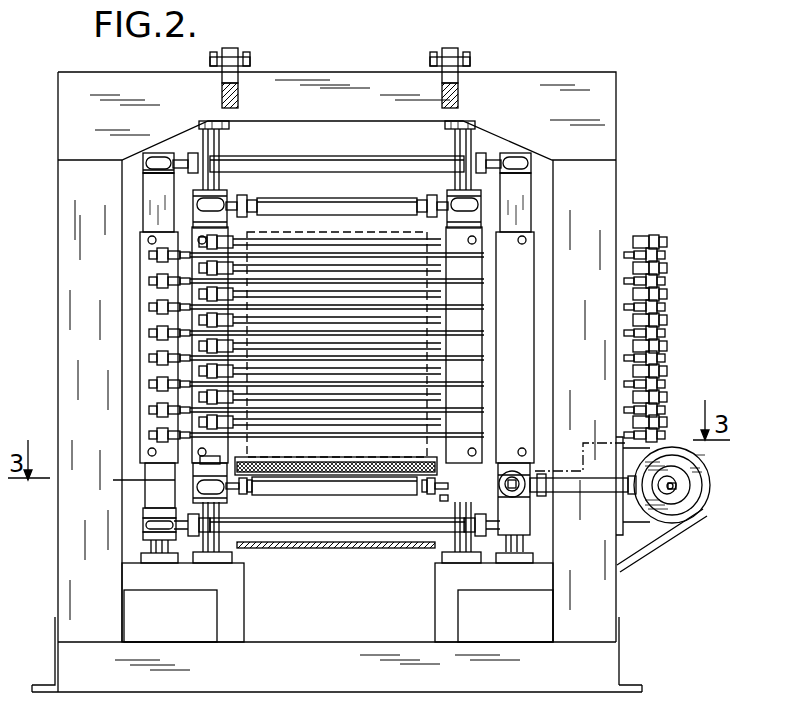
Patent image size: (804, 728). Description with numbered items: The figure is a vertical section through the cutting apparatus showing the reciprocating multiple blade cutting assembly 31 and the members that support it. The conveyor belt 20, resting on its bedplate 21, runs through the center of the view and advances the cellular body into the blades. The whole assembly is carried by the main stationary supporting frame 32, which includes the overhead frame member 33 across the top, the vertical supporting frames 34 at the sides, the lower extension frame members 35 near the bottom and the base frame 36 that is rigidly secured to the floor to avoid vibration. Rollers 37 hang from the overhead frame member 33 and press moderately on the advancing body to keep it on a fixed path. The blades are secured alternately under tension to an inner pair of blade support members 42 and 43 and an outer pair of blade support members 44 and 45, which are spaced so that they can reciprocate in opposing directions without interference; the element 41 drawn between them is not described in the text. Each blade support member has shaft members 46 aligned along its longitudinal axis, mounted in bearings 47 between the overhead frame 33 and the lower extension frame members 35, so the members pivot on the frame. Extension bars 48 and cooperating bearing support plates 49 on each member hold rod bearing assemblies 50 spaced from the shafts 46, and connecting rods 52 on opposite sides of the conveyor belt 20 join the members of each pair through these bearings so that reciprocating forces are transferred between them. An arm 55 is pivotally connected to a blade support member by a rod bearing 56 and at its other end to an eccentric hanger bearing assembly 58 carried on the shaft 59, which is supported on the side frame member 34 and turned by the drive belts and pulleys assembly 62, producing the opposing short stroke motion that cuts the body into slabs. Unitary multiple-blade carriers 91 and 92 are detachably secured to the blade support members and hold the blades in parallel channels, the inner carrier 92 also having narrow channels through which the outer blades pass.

The conveyor belt 20 is at (293, 466).
The bedplate 21 is at (330, 472).
The reciprocating multiple blade cutting assembly 31 is at (152, 417).
The main stationary supporting frame 32 is at (621, 160).
The overhead frame member 33 is at (348, 78).
The vertical supporting frame 34 is at (62, 357).
The lower extension frame member 35 is at (188, 585).
The base frame 36 is at (362, 685).
The roller 37 is at (230, 50).
The inner post with gripping bolts 41 is at (315, 255).
The blade support member 42 is at (473, 270).
The blade support member 43 is at (195, 293).
The blade support member 44 is at (147, 192).
The blade support member 45 is at (532, 200).
The shaft member 46 is at (211, 144).
The bearing 47 is at (229, 124).
The extension bar 48 is at (153, 152).
The bearing support plate 49 is at (147, 173).
The rod bearing assembly 50 is at (178, 162).
The connecting rod 52 is at (347, 163).
The arm 55 is at (593, 487).
The rod bearing 56 is at (521, 478).
The eccentric hanger bearing assembly 58 is at (693, 500).
The shaft 59 is at (668, 490).
The drive belts and pulleys assembly 62 is at (658, 543).
The blade carrier 91 is at (220, 462).
The blade carrier 92 is at (172, 457).